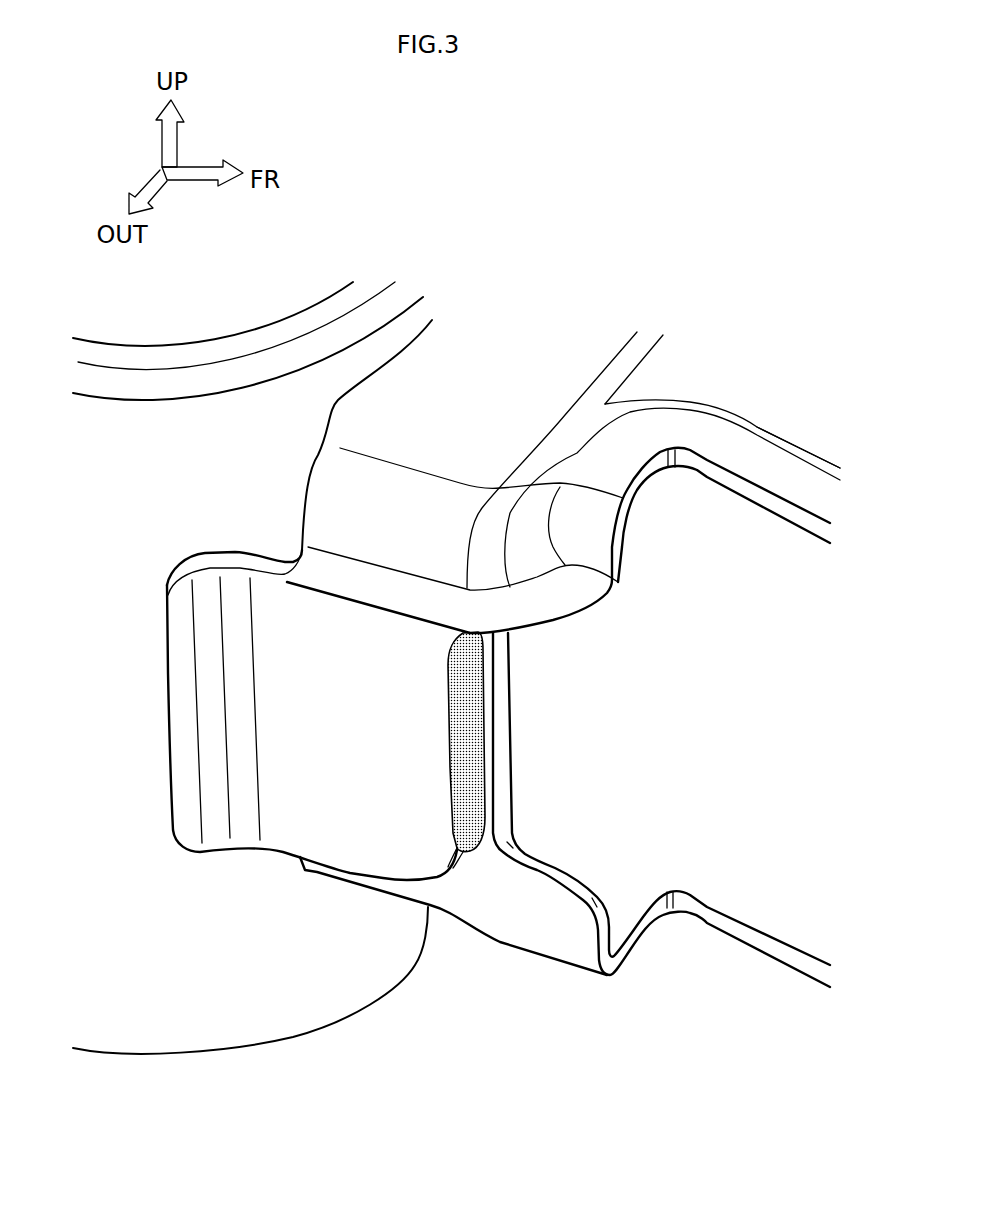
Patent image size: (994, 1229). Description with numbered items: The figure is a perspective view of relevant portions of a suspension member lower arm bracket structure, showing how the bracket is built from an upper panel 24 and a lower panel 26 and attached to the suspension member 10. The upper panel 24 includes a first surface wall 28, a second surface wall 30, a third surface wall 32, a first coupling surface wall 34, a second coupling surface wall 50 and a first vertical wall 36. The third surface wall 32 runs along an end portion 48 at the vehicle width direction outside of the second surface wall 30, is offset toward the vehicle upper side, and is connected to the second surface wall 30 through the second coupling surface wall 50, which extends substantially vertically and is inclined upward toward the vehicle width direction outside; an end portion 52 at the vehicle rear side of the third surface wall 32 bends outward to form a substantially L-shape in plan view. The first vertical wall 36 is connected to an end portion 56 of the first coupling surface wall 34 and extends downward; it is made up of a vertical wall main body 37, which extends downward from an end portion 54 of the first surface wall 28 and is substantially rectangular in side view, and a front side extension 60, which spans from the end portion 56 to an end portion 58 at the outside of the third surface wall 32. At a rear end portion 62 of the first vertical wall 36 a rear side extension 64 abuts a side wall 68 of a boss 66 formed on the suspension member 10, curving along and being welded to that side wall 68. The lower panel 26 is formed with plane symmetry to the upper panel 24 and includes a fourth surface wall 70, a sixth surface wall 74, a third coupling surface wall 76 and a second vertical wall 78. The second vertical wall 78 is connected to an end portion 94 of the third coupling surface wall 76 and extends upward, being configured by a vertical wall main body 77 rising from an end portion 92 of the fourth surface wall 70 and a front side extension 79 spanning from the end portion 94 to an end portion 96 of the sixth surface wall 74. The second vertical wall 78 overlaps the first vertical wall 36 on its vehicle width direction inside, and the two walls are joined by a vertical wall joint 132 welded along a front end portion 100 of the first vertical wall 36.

The suspension member 10 is at (368, 280).
The upper panel 24 is at (409, 646).
The lower panel 26 is at (632, 848).
The first surface wall 28 is at (458, 405).
The second surface wall 30 is at (632, 426).
The third surface wall 32 is at (629, 479).
The first coupling surface wall 34 is at (605, 385).
The first vertical wall 36 is at (357, 772).
The vertical wall main body 37 is at (360, 697).
The end portion 48 is at (718, 396).
The second coupling surface wall 50 is at (773, 440).
The end portion 52 is at (558, 554).
The end portion 54 is at (340, 532).
The end portion 56 is at (483, 563).
The end portion 58 is at (578, 555).
The front side extension 60 is at (557, 607).
The rear end portion 62 is at (290, 663).
The rear side extension 64 is at (183, 650).
The boss 66 is at (248, 348).
The side wall 68 is at (115, 517).
The fourth surface wall 70 is at (318, 877).
The sixth surface wall 74 is at (580, 972).
The third coupling surface wall 76 is at (462, 923).
The vertical wall main body 77 is at (400, 890).
The second vertical wall 78 is at (378, 885).
The front side extension 79 is at (530, 907).
The end portion 92 is at (315, 870).
The end portion 94 is at (457, 900).
The end portion 96 is at (557, 952).
The front end portion 100 is at (415, 749).
The vertical wall joint 132 is at (467, 767).